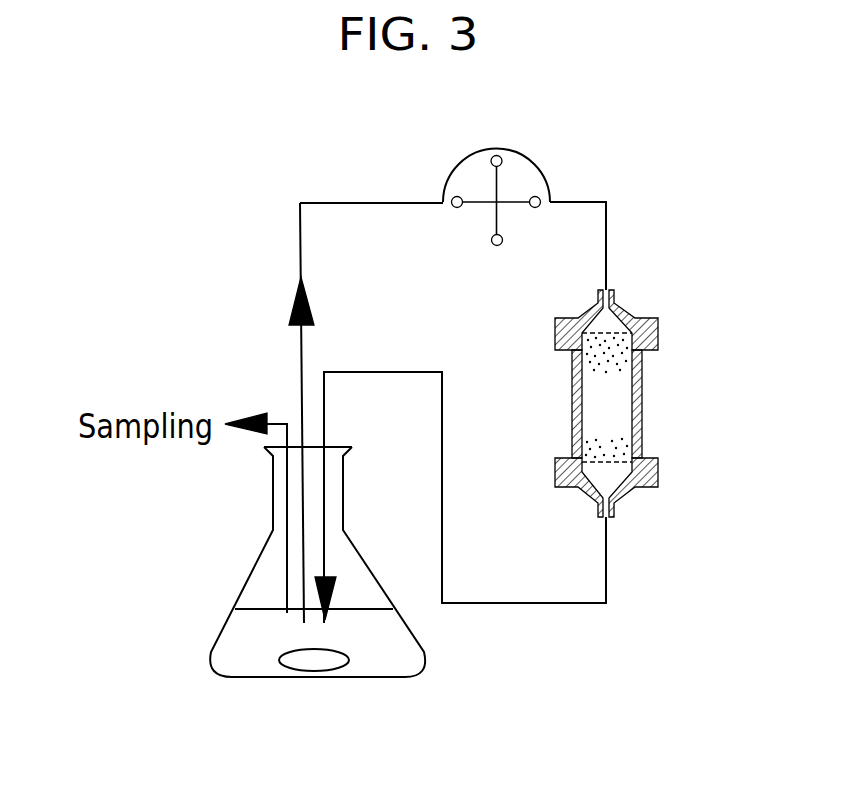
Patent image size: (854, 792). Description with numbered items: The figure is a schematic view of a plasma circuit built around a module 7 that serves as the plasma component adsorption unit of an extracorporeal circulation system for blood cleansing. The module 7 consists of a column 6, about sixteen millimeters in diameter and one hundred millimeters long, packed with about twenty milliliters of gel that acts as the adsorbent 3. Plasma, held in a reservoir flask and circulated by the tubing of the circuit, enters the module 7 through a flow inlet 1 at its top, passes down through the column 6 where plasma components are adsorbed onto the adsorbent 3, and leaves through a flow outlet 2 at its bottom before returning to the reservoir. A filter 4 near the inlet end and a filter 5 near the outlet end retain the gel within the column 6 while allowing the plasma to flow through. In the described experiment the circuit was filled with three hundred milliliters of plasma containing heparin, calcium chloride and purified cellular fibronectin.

The flow inlet 1 is at (612, 286).
The flow outlet 2 is at (612, 518).
The adsorbent (gel) 3 is at (607, 460).
The filter 4 is at (641, 370).
The filter 5 is at (642, 447).
The column 6 is at (642, 415).
The module 7 is at (678, 289).